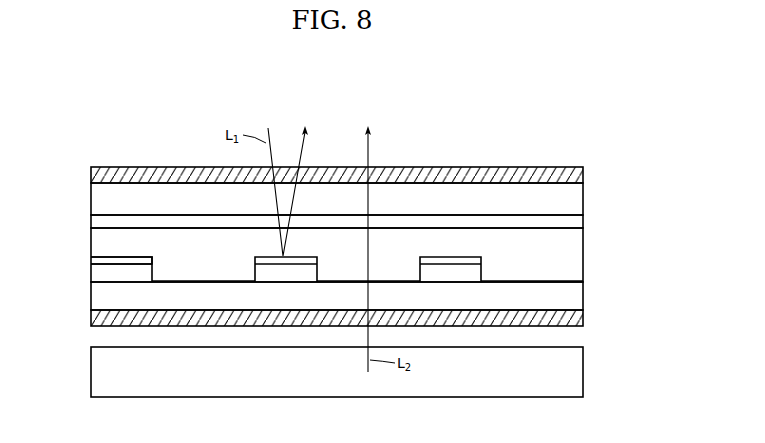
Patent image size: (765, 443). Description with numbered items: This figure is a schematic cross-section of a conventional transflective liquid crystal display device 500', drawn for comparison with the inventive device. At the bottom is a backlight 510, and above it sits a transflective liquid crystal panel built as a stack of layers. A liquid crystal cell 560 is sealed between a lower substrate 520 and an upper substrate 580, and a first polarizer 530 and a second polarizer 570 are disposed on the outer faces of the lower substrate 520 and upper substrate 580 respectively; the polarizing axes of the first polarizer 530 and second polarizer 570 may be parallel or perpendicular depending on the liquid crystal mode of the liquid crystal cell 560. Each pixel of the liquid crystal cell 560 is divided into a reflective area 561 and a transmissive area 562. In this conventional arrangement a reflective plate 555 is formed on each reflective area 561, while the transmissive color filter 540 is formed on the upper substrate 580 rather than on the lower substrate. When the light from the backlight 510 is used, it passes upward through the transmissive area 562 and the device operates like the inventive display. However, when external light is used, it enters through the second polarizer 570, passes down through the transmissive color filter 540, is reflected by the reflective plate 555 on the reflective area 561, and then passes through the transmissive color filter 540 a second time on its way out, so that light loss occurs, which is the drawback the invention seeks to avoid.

The conventional transflective liquid crystal display device 500' is at (581, 111).
The backlight 510 is at (584, 372).
The substrate 520 is at (584, 298).
The first polarizer 530 is at (584, 319).
The transmissive color filter 540 is at (584, 222).
The reflective plate 555 is at (91, 262).
The liquid crystal cell 560 is at (584, 257).
The reflective area 561 is at (105, 253).
The transmissive area 562 is at (189, 275).
The second polarizer 570 is at (584, 175).
The upper substrate 580 is at (584, 197).